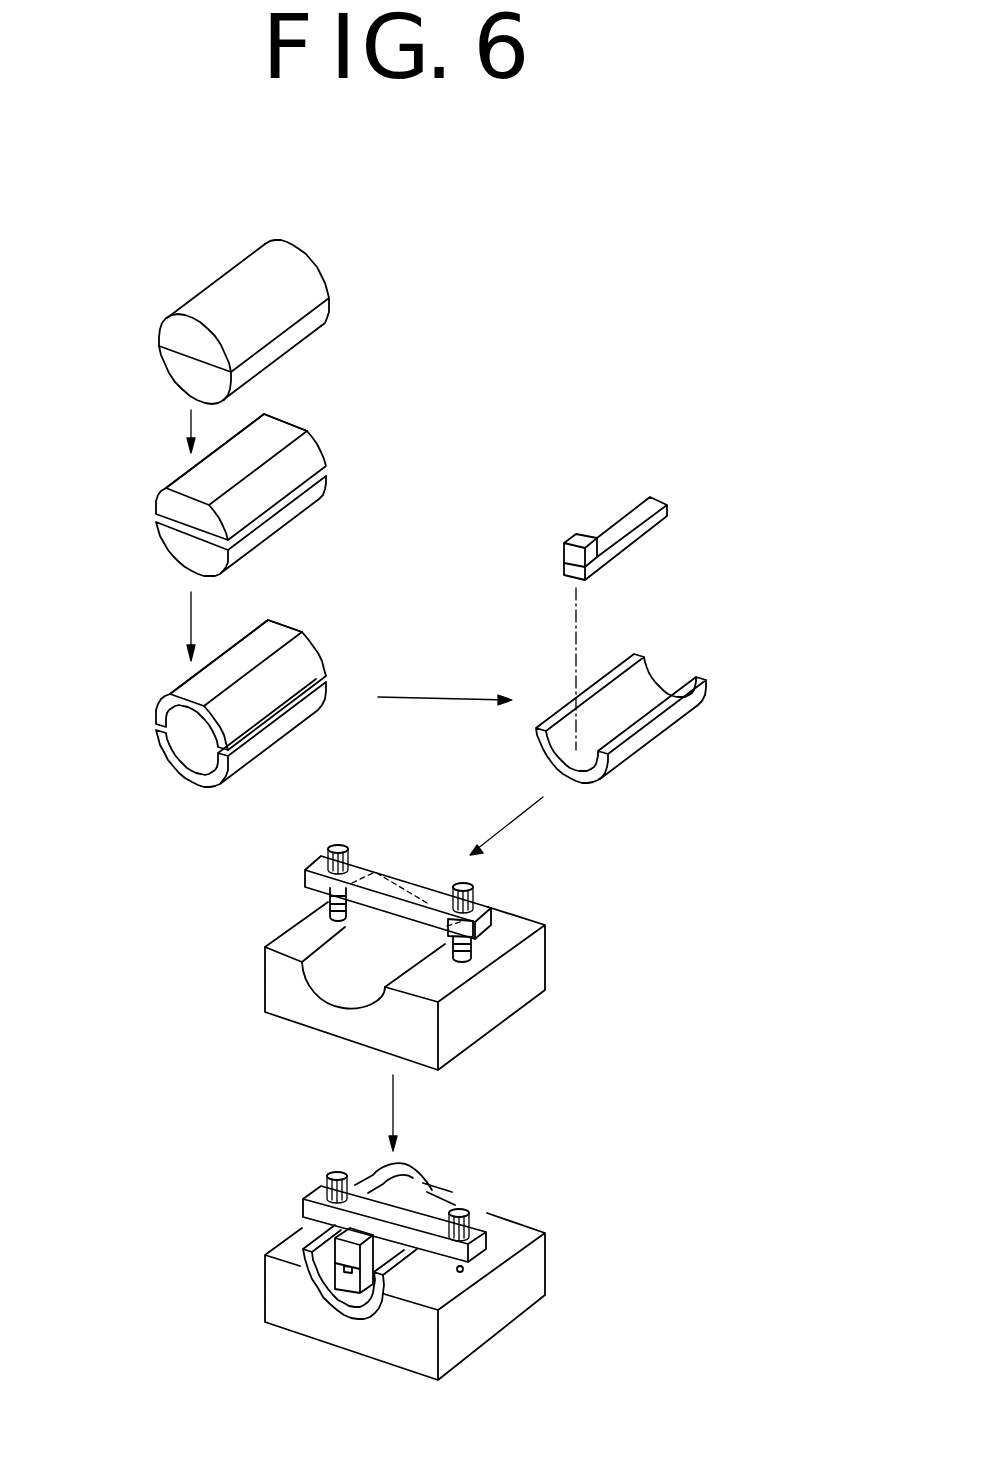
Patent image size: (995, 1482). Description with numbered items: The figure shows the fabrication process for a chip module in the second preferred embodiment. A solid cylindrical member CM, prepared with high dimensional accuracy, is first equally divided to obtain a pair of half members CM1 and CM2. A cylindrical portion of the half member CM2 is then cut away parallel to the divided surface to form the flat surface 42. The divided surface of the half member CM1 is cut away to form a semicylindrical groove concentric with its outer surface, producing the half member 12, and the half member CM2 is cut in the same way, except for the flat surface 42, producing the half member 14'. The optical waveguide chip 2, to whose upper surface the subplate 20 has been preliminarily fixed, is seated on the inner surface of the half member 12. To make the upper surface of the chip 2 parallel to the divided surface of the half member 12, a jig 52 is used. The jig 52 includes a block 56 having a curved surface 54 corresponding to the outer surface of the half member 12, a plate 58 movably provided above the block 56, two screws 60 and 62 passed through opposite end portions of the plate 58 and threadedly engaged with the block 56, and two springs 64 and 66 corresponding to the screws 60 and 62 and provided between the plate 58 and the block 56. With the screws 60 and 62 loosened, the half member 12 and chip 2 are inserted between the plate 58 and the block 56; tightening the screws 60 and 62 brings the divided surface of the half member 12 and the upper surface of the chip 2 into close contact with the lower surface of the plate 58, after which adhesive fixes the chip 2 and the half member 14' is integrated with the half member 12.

The solid cylindrical member CM is at (498, 267).
The half member CM1 is at (300, 335).
The half member CM2 is at (315, 289).
The flat surface 42 is at (185, 482).
The half member 14' is at (321, 658).
The half member 12 is at (328, 687).
The subplate 20 is at (576, 534).
The optical waveguide chip 2 is at (668, 510).
The jig 52 is at (585, 902).
The curved surface 54 is at (360, 978).
The block 56 is at (265, 978).
The plate 58 is at (430, 887).
The screw 60 is at (337, 847).
The screw 62 is at (470, 885).
The spring 64 is at (330, 905).
The spring 66 is at (473, 945).